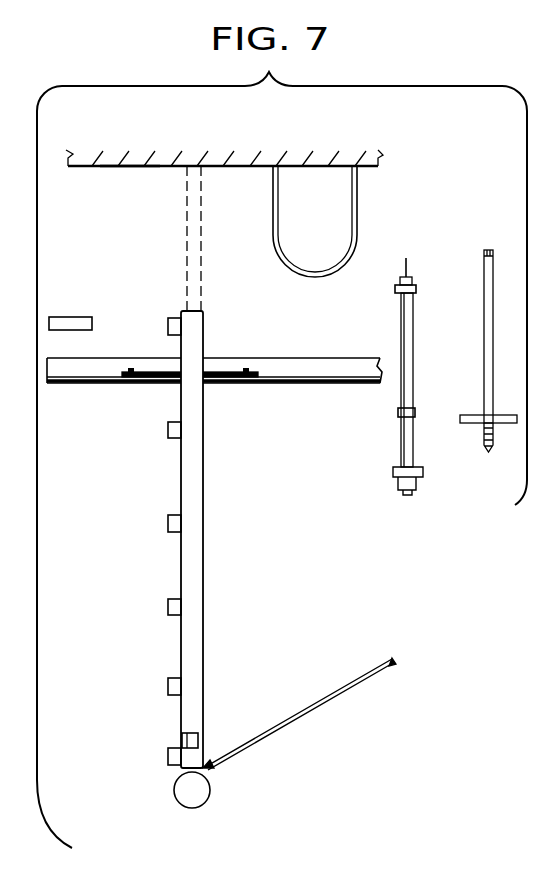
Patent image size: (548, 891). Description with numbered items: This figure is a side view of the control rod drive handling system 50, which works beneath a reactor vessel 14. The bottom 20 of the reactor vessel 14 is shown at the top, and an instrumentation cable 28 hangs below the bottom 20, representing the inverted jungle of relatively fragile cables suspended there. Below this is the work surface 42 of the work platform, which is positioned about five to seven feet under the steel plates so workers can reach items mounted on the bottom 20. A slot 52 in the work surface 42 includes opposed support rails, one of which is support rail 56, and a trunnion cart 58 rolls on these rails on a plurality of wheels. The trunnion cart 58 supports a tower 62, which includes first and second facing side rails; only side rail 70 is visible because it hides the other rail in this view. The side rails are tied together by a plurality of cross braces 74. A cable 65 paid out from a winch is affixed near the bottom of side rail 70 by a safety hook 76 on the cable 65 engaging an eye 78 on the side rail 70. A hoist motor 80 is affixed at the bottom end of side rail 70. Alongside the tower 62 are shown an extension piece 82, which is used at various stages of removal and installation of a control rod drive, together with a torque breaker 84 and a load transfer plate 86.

The reactor vessel 14 is at (146, 167).
The bottom of reactor vessel 20 is at (95, 167).
The instrumentation cable 28 is at (346, 222).
The handling system 50 is at (440, 223).
The load transfer plate 86 is at (66, 314).
The work surface 42 is at (341, 357).
The slot 52 is at (287, 368).
The support rail 56 is at (278, 385).
The trunnion cart 58 is at (222, 373).
The tower 62 is at (256, 484).
The first side rail 70 is at (203, 567).
The cross braces 74 is at (168, 605).
The eye 78 is at (207, 765).
The safety hook 76 is at (209, 768).
The hoist motor 80 is at (200, 800).
The cable 65 is at (357, 678).
The extension piece 82 is at (415, 362).
The torque breaker 84 is at (484, 316).